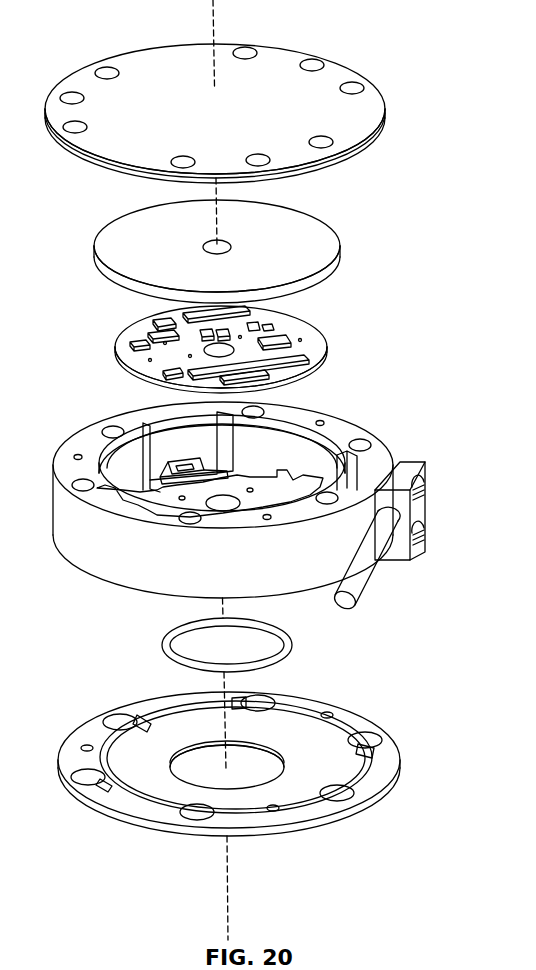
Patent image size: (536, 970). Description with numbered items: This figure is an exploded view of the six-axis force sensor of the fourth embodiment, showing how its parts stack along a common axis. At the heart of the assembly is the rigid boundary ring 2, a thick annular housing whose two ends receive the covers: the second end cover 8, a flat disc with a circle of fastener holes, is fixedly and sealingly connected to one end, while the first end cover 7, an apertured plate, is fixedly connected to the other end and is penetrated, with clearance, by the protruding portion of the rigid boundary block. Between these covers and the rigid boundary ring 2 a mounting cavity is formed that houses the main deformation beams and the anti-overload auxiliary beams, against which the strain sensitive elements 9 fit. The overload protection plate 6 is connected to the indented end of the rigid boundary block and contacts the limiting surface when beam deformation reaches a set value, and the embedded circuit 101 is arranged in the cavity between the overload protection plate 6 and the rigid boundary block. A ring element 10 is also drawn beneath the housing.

The second end cover 8 is at (310, 88).
The overload protection plate 6 is at (297, 240).
The embedded circuit 101 is at (310, 330).
The rigid boundary ring 2 is at (345, 428).
The strain sensitive element 9 is at (183, 463).
The sealing ring 10 is at (285, 650).
The first end cover 7 is at (348, 775).